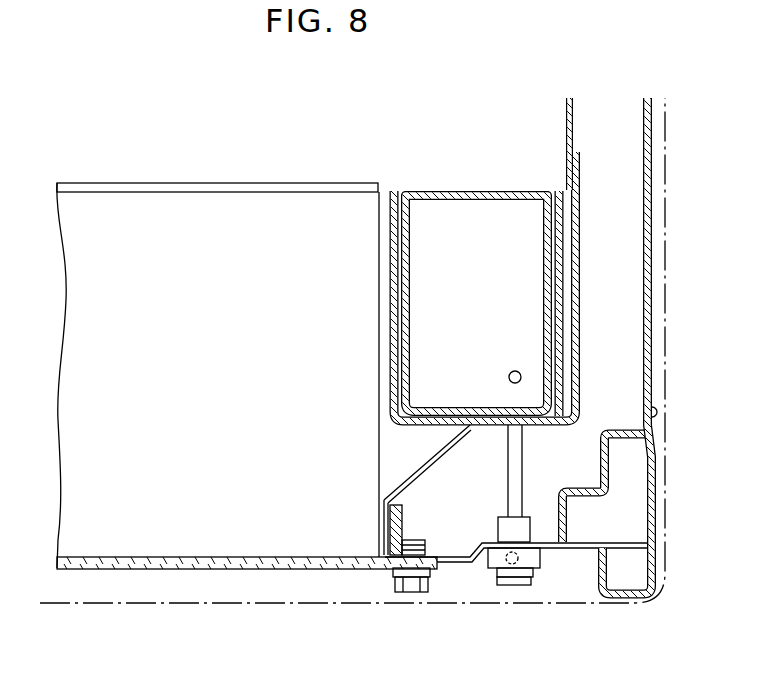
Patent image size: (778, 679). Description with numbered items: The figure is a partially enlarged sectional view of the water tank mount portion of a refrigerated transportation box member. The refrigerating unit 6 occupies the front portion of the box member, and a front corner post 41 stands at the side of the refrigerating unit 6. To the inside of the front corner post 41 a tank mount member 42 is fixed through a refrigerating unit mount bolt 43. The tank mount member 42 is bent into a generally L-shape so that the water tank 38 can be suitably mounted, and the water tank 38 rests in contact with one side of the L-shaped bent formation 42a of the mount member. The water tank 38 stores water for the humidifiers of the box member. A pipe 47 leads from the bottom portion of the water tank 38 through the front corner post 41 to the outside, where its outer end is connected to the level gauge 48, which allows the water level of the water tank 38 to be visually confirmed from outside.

The refrigerating unit 6 is at (236, 205).
The water tank 38 is at (485, 214).
The front corner post 41 is at (639, 598).
The tank mount member 42 is at (584, 330).
The L-shaped bent formation 42a is at (574, 430).
The refrigerating unit mount bolt 43 is at (410, 593).
The pipe 47 is at (507, 489).
The level gauge 48 is at (516, 585).